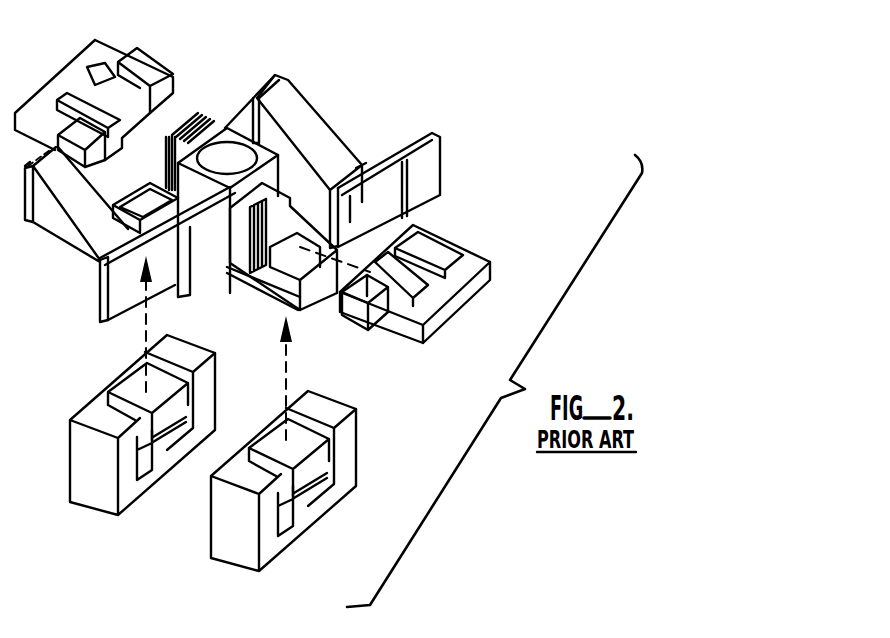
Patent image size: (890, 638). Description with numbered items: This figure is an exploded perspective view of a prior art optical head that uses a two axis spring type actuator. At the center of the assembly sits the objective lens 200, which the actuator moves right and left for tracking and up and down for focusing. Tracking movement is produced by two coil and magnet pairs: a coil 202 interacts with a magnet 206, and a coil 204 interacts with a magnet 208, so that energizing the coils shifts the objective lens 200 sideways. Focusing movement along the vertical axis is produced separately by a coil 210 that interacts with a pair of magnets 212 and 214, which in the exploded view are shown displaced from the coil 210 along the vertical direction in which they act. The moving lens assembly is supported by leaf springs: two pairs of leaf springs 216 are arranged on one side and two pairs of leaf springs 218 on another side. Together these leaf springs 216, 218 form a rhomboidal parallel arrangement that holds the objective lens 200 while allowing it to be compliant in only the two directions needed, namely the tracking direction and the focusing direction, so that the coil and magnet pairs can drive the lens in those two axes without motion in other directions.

The objective lens 200 is at (221, 148).
The coil 202 is at (194, 104).
The coil 204 is at (250, 287).
The magnet 206 is at (78, 62).
The magnet 208 is at (490, 252).
The coil 210 is at (320, 300).
The magnet 212 is at (353, 497).
The magnet 214 is at (122, 515).
The leaf springs 216 is at (81, 305).
The leaf springs 218 is at (403, 126).